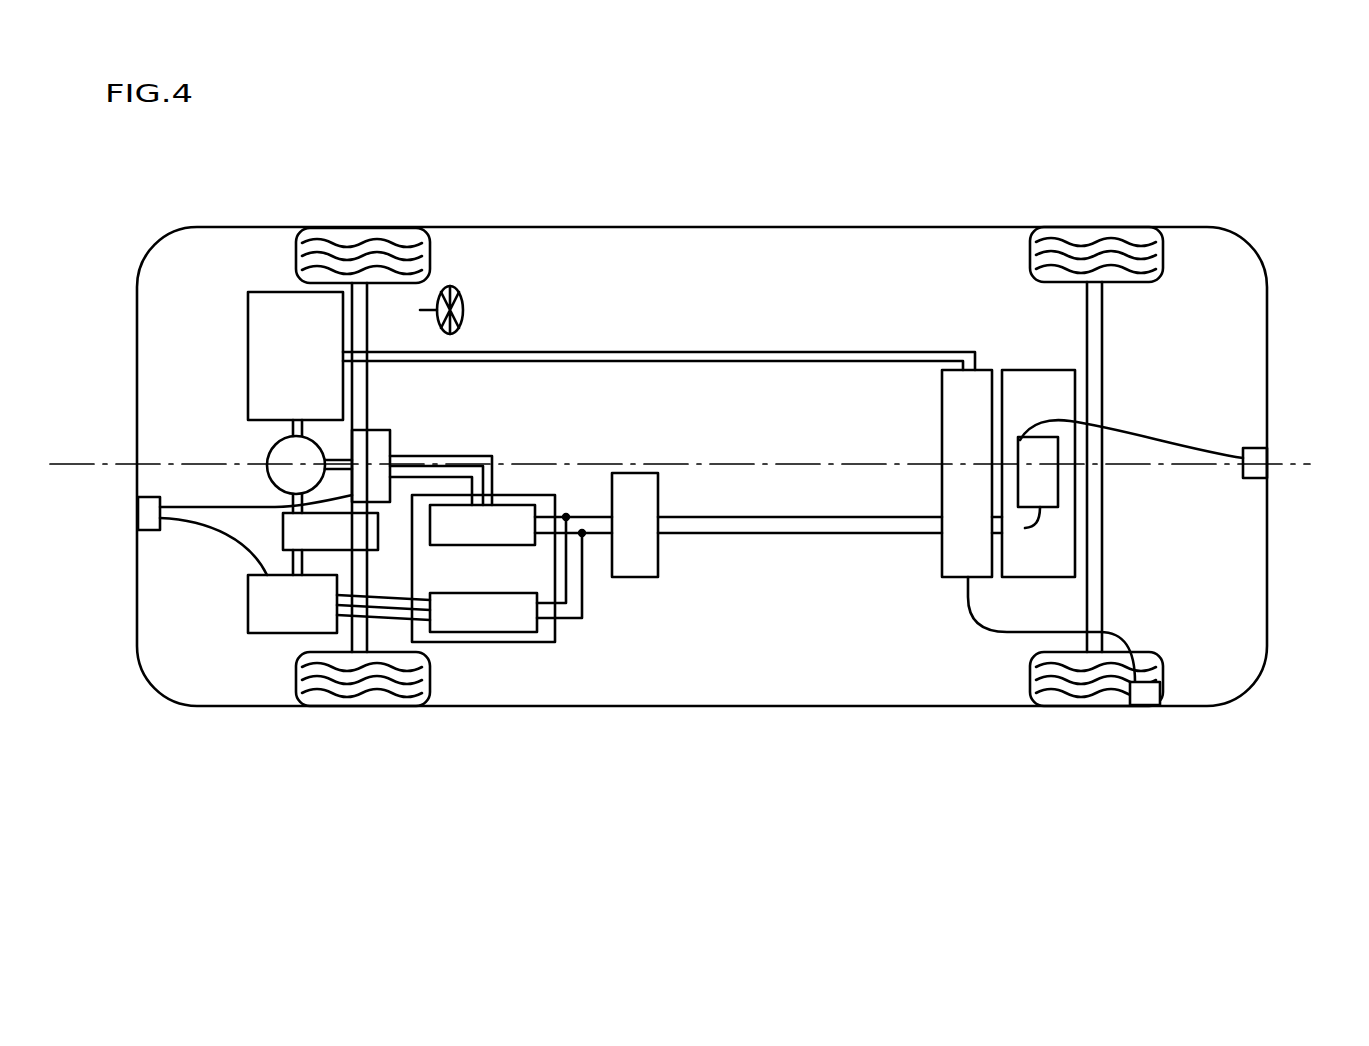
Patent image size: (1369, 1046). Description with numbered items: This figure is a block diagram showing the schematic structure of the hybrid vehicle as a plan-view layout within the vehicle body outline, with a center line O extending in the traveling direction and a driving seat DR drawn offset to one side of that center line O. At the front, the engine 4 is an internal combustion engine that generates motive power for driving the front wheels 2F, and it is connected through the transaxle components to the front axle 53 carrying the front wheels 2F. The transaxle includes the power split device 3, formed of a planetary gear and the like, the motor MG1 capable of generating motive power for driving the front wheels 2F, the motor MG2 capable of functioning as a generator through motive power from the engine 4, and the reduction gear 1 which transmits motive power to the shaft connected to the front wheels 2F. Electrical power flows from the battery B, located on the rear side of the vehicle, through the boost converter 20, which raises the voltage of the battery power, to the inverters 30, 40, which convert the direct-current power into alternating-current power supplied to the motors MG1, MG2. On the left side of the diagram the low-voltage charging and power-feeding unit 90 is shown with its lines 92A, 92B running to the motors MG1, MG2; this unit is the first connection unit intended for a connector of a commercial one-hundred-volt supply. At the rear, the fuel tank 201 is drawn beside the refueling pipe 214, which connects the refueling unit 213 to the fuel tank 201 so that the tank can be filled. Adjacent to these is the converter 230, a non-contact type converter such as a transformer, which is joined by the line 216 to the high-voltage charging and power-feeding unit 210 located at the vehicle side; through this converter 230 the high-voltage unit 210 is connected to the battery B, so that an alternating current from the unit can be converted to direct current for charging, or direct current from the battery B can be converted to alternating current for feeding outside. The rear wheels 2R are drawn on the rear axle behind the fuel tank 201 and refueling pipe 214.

The reduction gear 1 is at (355, 528).
The front wheels 2F is at (358, 233).
The rear wheel 2R is at (1097, 685).
The power split device 3 is at (270, 452).
The engine 4 is at (248, 352).
The boost converter 20 is at (640, 578).
The inverter 30 is at (457, 613).
The inverter 40 is at (508, 523).
The front axle 53 is at (360, 635).
The low-voltage charging and power-feeding unit 90 is at (138, 512).
The line 92A is at (203, 523).
The line 92B is at (203, 507).
The fuel tank 201 is at (960, 578).
The high-voltage charging and power-feeding unit 210 is at (1255, 448).
The refueling unit 213 is at (1143, 693).
The refueling pipe 214 is at (1047, 578).
The line 216 is at (1177, 442).
The converter 230 is at (1058, 492).
The battery B is at (1055, 635).
The driving seat DR is at (462, 265).
The motor MG1 is at (248, 607).
The motor MG2 is at (393, 445).
The center line O is at (57, 463).